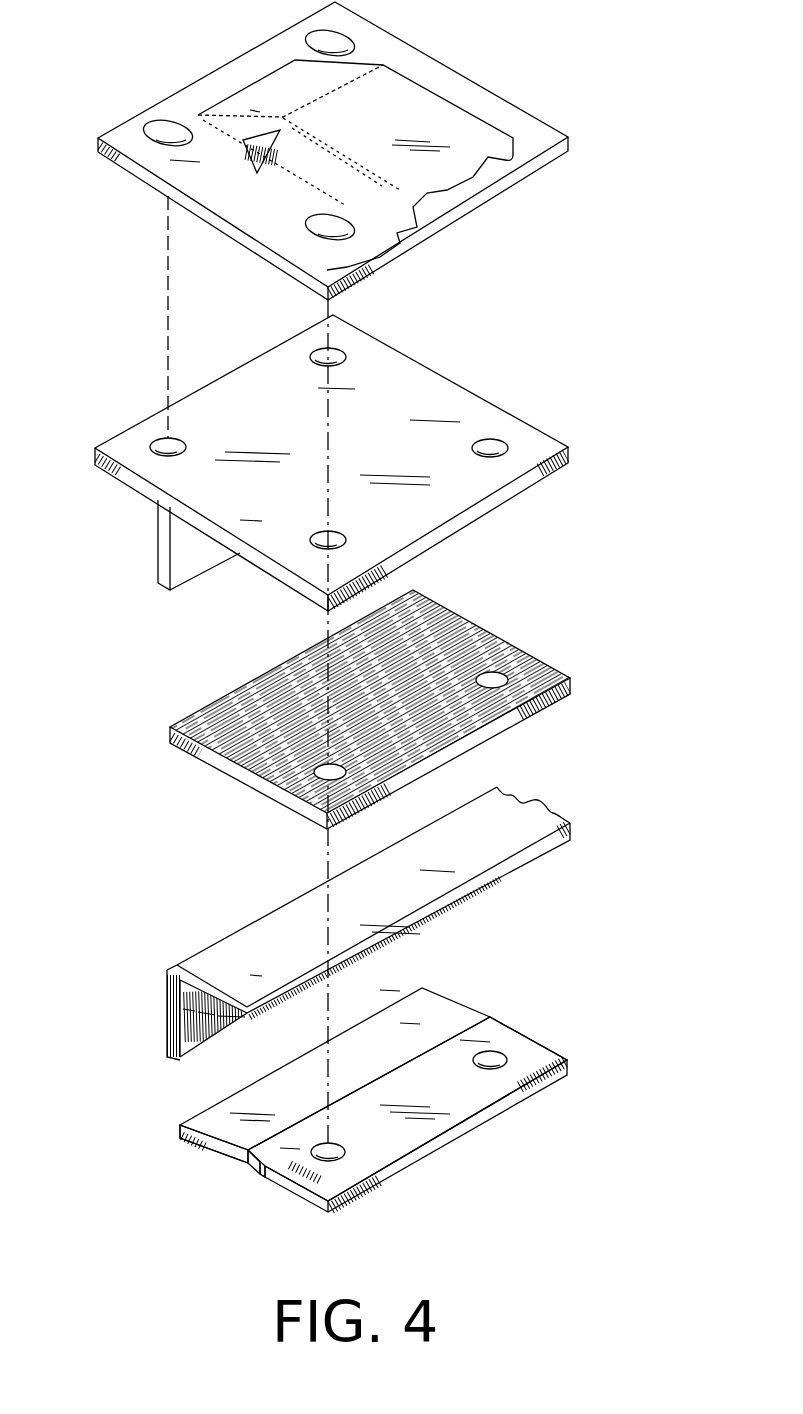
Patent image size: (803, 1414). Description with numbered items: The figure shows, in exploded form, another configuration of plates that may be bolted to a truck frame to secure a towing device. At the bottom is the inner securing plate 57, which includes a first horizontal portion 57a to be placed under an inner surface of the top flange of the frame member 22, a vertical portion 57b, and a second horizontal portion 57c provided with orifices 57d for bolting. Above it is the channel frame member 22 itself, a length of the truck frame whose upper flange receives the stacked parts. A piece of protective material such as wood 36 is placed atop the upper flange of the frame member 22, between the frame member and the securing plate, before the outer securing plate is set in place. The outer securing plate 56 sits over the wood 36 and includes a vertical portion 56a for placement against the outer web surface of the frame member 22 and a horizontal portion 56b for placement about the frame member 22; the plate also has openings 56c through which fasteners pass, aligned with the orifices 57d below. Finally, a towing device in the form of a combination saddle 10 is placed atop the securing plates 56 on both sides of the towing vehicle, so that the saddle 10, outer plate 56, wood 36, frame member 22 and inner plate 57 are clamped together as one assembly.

The combination saddle 10 is at (175, 93).
The outer securing plate 56 is at (321, 461).
The vertical portion 56a is at (155, 548).
The horizontal portion 56b is at (540, 447).
The hole of mounting plate 56c is at (162, 447).
The piece of wood 36 is at (570, 688).
The left channel frame member 22 is at (162, 1013).
The inner securing plate 57 is at (378, 1118).
The first horizontal portion 57a is at (218, 1152).
The vertical portion 57b is at (266, 1178).
The second horizontal portion 57c is at (418, 1153).
The orifices 57d is at (495, 1053).